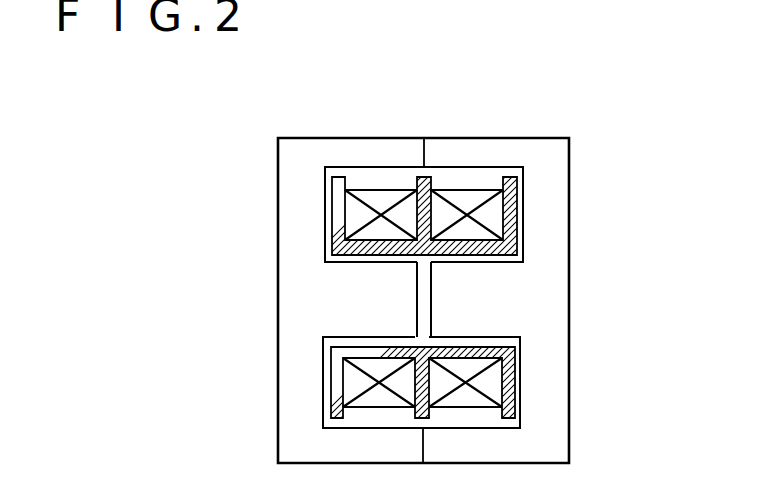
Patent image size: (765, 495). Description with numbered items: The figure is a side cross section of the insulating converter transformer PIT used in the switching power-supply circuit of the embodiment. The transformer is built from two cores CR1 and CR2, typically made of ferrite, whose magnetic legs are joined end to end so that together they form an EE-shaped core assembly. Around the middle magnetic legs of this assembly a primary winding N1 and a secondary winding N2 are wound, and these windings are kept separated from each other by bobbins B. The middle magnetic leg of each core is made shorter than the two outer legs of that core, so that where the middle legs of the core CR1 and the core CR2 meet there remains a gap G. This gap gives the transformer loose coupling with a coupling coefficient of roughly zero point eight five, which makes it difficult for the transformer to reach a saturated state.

The insulating converter transformer PIT is at (455, 97).
The core CR1 is at (302, 152).
The core CR2 is at (543, 155).
The bobbin B is at (517, 200).
The gap G is at (424, 293).
The primary winding N1 is at (357, 212).
The secondary winding N2 is at (487, 217).